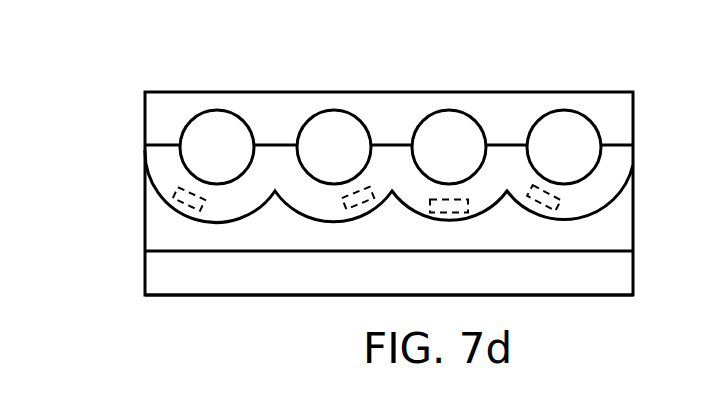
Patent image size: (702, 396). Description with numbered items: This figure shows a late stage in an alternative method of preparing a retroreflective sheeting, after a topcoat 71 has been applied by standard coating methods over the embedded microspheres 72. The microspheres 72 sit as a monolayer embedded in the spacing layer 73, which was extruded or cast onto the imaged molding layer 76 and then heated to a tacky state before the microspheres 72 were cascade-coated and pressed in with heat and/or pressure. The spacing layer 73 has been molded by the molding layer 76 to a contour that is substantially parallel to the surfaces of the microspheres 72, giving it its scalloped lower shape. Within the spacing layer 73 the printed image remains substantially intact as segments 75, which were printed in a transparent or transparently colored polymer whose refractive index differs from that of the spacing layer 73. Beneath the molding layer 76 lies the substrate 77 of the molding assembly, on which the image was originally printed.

The topcoat 71 is at (618, 108).
The microspheres 72 is at (580, 135).
The spacing layer 73 is at (607, 170).
The image segments 75 is at (550, 230).
The molding layer 76 is at (615, 238).
The substrate 77 is at (610, 280).